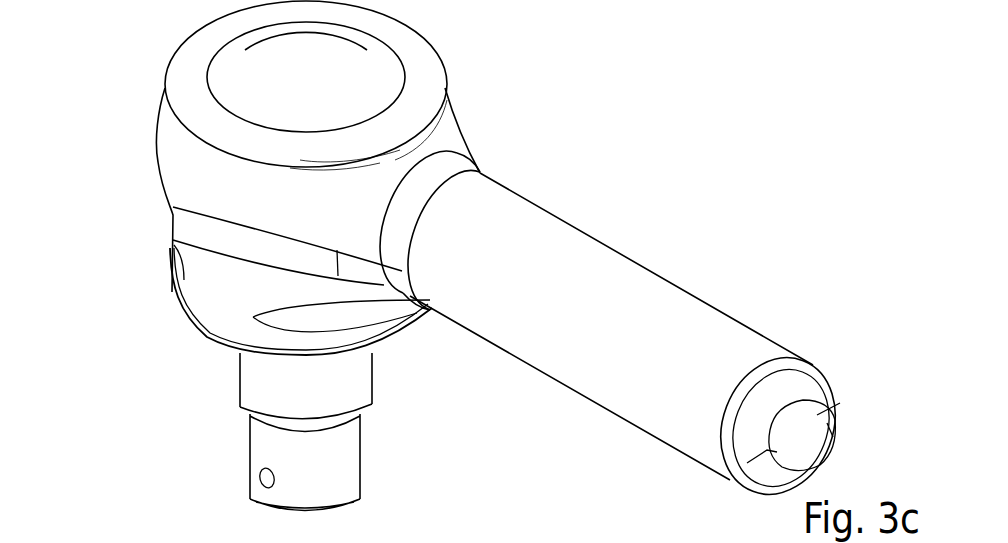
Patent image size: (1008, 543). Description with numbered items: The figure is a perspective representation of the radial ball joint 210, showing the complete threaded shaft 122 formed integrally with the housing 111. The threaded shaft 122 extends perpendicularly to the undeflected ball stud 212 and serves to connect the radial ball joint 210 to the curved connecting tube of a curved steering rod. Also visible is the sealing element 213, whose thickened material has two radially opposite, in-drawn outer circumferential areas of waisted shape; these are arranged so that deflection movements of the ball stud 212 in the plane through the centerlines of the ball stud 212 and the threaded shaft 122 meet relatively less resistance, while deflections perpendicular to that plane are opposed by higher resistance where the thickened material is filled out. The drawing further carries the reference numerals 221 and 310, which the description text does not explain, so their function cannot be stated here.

The housing 111 is at (157, 90).
The radial ball joint 210 is at (473, 98).
The threaded shaft 122 is at (633, 245).
The sealing element 213 is at (177, 243).
The flange 221 is at (198, 332).
The ball stud 212 is at (234, 383).
The bore 310 is at (711, 471).